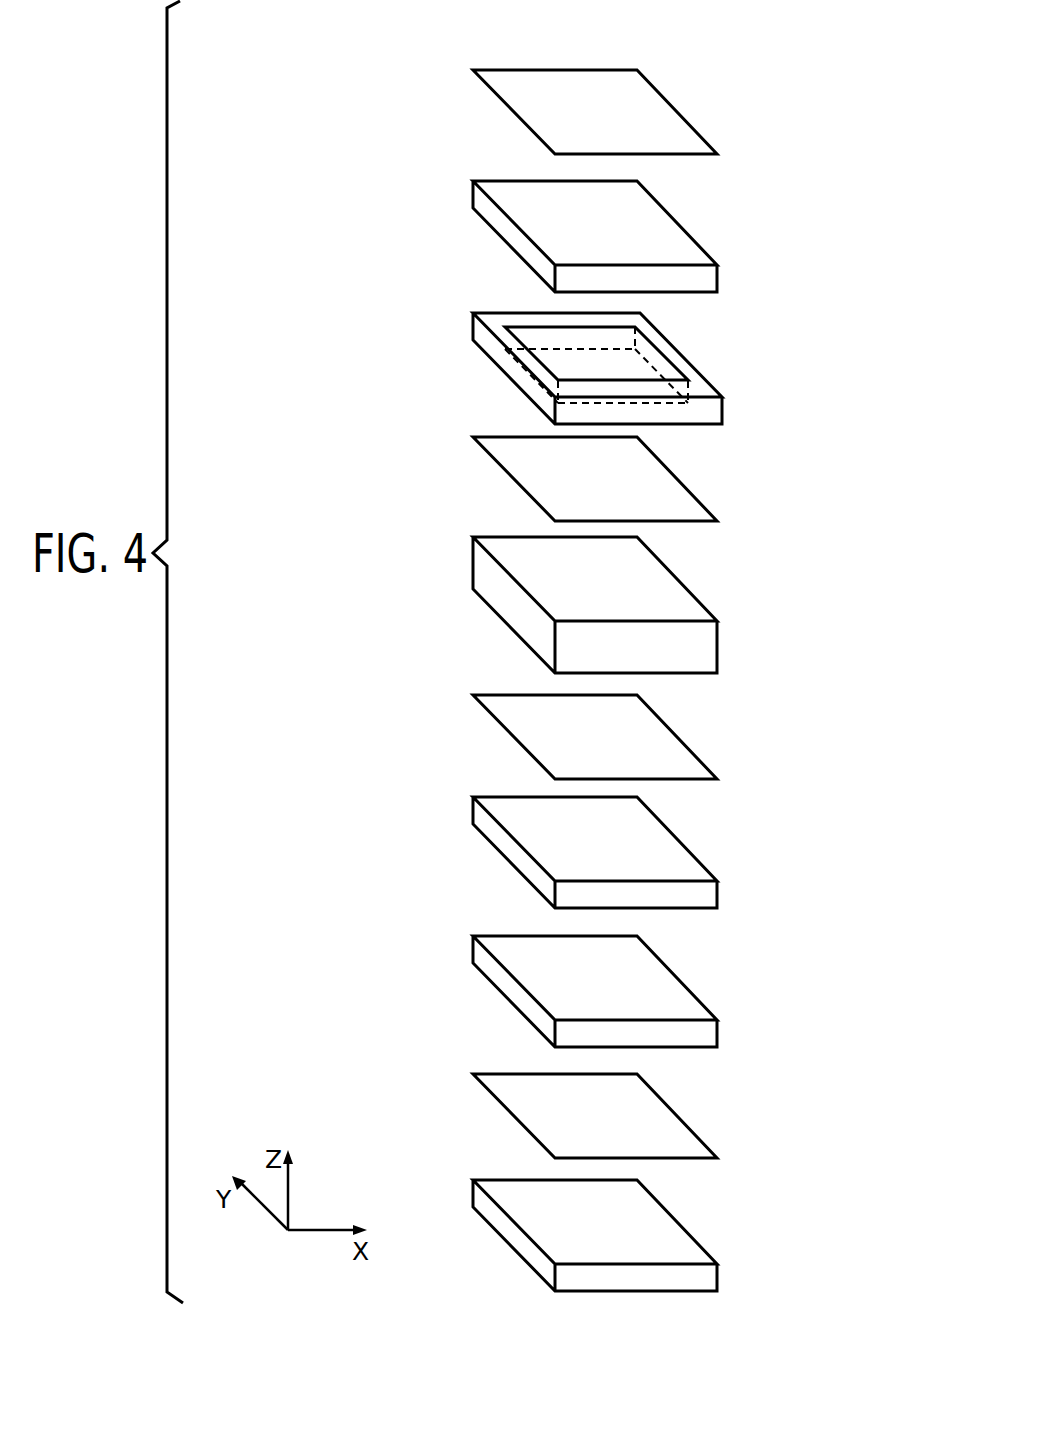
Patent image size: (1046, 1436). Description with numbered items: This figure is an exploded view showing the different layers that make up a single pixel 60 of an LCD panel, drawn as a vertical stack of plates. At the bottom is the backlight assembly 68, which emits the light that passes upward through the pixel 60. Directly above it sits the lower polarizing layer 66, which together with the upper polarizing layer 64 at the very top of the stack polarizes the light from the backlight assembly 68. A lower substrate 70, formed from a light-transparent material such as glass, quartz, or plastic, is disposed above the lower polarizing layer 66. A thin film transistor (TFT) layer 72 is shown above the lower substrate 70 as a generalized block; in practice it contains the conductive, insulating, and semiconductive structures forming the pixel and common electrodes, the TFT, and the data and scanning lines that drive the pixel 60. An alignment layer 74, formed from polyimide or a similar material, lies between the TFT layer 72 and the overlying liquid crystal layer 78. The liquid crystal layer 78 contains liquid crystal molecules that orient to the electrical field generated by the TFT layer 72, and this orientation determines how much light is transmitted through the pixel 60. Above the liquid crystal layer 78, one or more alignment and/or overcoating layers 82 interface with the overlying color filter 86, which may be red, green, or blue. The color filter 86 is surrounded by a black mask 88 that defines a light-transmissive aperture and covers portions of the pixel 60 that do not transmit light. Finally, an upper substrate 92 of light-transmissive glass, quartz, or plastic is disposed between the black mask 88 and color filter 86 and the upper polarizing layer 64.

The pixel 60 is at (481, 38).
The upper polarizing layer 64 is at (675, 108).
The upper substrate 92 is at (719, 278).
The black mask 88 is at (627, 367).
The color filter 86 is at (628, 363).
The alignment and/or overcoating layers 82 is at (675, 475).
The liquid crystal layer 78 is at (719, 647).
The alignment layer 74 is at (675, 733).
The thin film transistor (TFT) layer 72 is at (719, 894).
The lower substrate 70 is at (719, 1033).
The lower polarizing layer 66 is at (675, 1112).
The backlight assembly 68 is at (719, 1277).